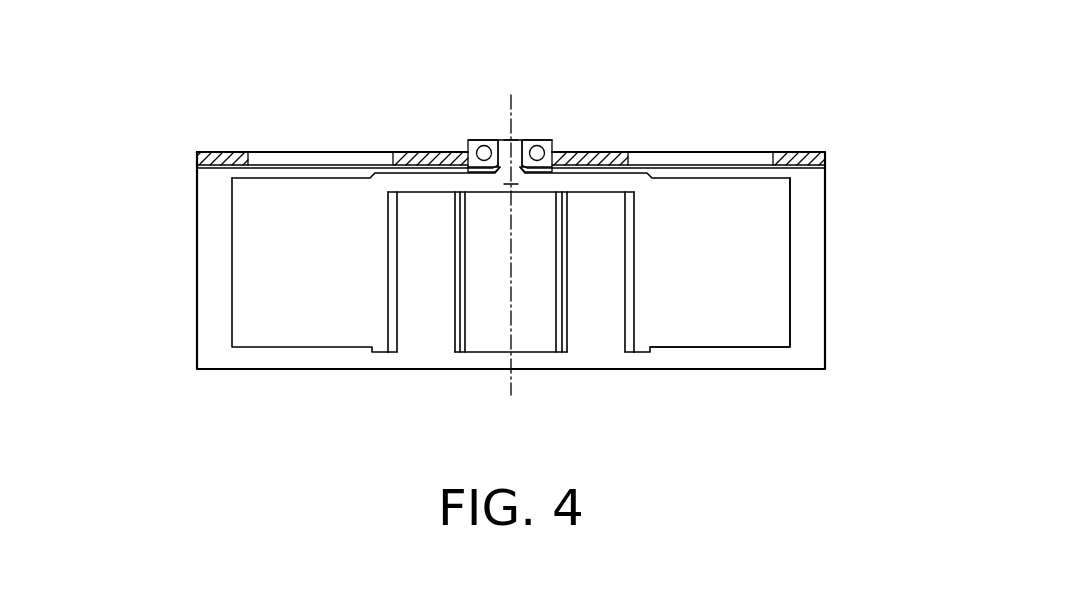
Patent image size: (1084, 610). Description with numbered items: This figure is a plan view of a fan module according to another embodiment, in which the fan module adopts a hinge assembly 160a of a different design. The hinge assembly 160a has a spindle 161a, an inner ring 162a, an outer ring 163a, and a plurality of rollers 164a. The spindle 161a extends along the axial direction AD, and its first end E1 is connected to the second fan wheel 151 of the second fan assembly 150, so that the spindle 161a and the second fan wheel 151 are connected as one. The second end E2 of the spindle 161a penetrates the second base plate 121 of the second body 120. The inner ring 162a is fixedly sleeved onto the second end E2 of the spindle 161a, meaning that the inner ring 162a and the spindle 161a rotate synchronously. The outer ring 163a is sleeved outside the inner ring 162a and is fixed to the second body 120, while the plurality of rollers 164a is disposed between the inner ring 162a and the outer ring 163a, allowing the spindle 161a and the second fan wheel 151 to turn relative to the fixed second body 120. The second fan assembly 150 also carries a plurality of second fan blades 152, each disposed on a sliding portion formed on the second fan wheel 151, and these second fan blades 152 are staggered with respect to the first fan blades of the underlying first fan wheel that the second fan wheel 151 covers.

The second body 120 is at (534, 230).
The second base plate 121 is at (800, 152).
The second fan assembly 150 is at (687, 420).
The second fan wheel 151 is at (588, 187).
The second fan blades 152 is at (675, 329).
The hinge assembly 160a is at (122, 30).
The spindle 161a is at (467, 142).
The inner ring 162a is at (525, 140).
The outer ring 163a is at (552, 152).
The rollers 164a is at (537, 144).
The axial direction AD is at (511, 227).
The first end E1 is at (507, 186).
The second end E2 is at (511, 140).